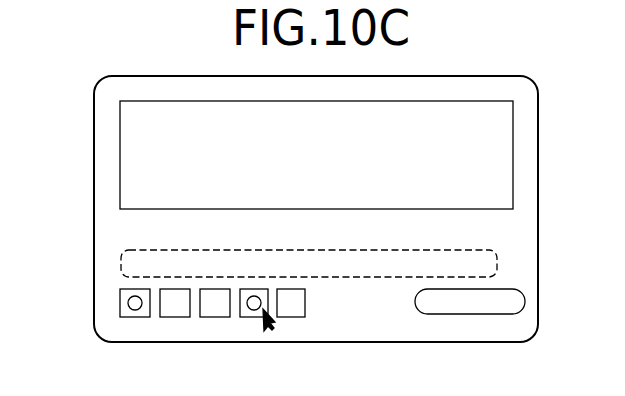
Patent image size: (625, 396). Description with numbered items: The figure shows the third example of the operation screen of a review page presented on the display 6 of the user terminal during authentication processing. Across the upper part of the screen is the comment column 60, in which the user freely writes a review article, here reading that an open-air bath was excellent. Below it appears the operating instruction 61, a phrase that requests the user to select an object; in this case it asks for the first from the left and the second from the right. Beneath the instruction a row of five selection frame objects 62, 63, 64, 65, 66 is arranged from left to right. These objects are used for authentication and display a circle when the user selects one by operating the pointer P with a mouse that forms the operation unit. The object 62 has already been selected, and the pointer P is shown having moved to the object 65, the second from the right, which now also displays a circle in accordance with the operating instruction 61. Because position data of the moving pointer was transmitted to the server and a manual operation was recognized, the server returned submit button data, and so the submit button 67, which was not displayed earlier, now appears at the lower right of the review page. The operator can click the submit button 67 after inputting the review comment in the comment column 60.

The display 6 is at (93, 99).
The comment column 60 is at (120, 158).
The operating instruction 61 is at (120, 262).
The object 62 is at (133, 317).
The object 63 is at (172, 317).
The object 64 is at (213, 317).
The object 65 is at (251, 317).
The object 66 is at (288, 317).
The submit button 67 is at (468, 314).
The pointer P is at (273, 317).